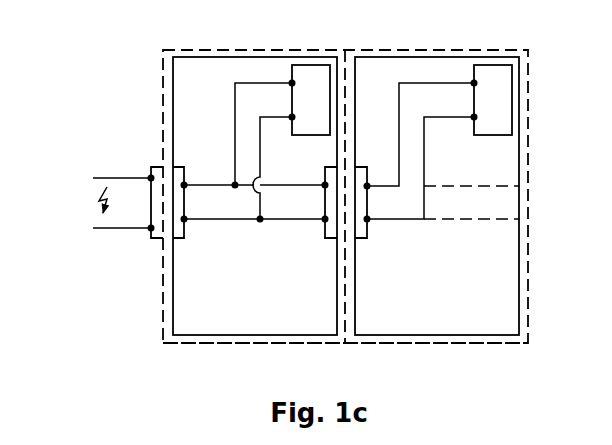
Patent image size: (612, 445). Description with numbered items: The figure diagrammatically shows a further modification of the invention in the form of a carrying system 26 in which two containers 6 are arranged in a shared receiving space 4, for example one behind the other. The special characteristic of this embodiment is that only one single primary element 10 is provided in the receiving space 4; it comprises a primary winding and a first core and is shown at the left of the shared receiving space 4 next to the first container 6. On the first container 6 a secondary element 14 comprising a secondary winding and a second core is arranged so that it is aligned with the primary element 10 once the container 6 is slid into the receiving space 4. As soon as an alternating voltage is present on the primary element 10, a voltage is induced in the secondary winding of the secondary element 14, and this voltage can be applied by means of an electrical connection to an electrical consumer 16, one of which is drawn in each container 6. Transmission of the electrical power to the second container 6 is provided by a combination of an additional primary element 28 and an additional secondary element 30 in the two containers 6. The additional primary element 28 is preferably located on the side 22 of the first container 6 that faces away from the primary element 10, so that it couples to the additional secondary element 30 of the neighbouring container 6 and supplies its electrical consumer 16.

The receiving space 4 is at (165, 333).
The container 6 is at (222, 315).
The primary element 10 is at (153, 240).
The secondary element 14 is at (180, 240).
The electrical consumer 16 is at (310, 85).
The side of the container 22 is at (347, 299).
The carrying system 26 is at (116, 82).
The additional primary element 28 is at (327, 240).
The additional secondary element 30 is at (358, 240).